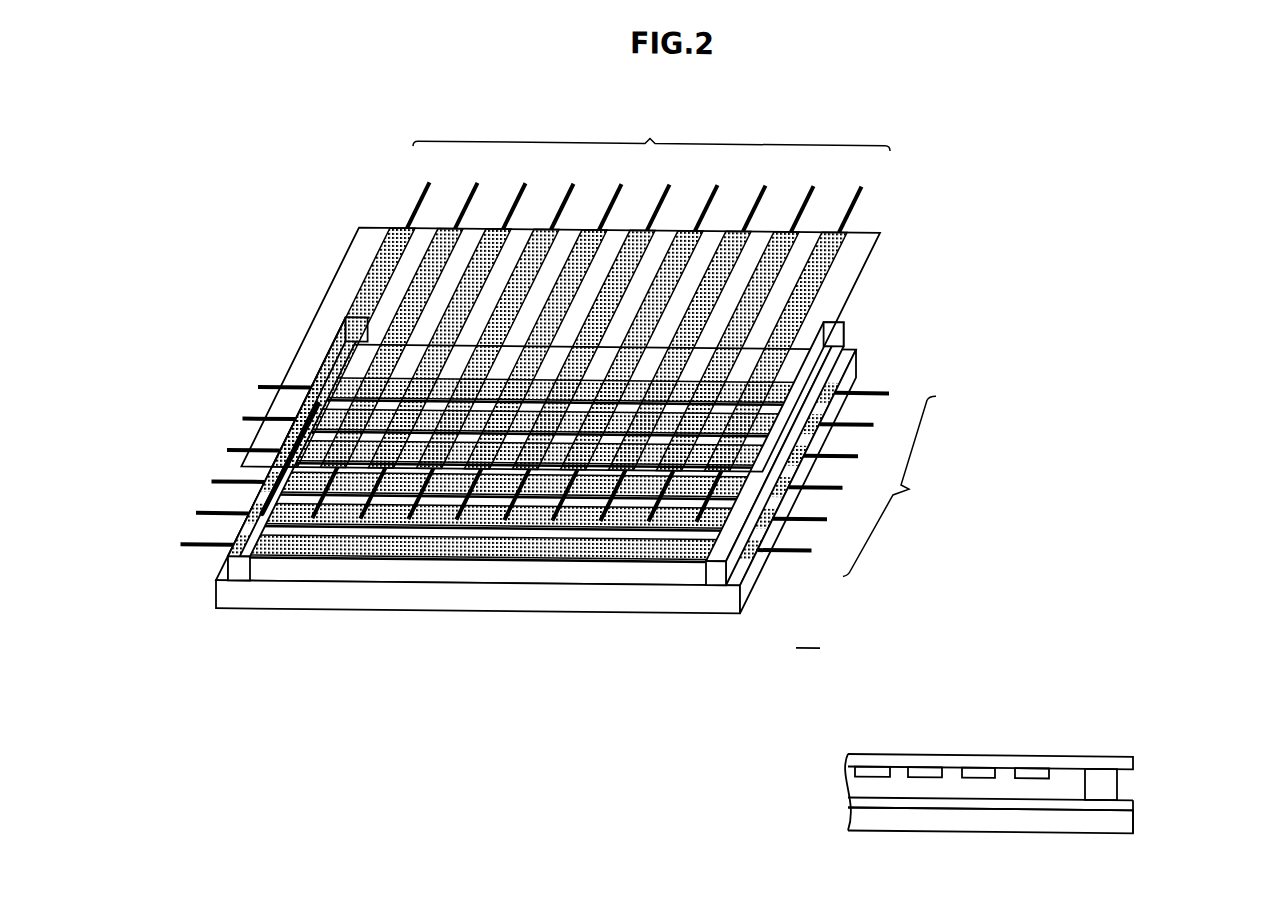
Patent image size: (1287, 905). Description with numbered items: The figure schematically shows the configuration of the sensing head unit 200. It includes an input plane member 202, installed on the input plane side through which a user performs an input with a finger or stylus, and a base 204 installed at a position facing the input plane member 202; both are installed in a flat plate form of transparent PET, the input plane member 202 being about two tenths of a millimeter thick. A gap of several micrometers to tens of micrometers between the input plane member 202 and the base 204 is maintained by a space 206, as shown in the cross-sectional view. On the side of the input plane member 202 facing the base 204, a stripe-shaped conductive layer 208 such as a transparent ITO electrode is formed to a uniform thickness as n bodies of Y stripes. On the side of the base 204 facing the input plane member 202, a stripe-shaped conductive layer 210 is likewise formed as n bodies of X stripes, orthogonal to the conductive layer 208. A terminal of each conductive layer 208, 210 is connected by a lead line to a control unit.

The sensing head unit 200 is at (690, 491).
The input plane member 202 is at (876, 244).
The base 204 is at (567, 595).
The space 206 is at (238, 573).
The conductive layer 208 is at (380, 265).
The conductive layer 210 is at (433, 519).